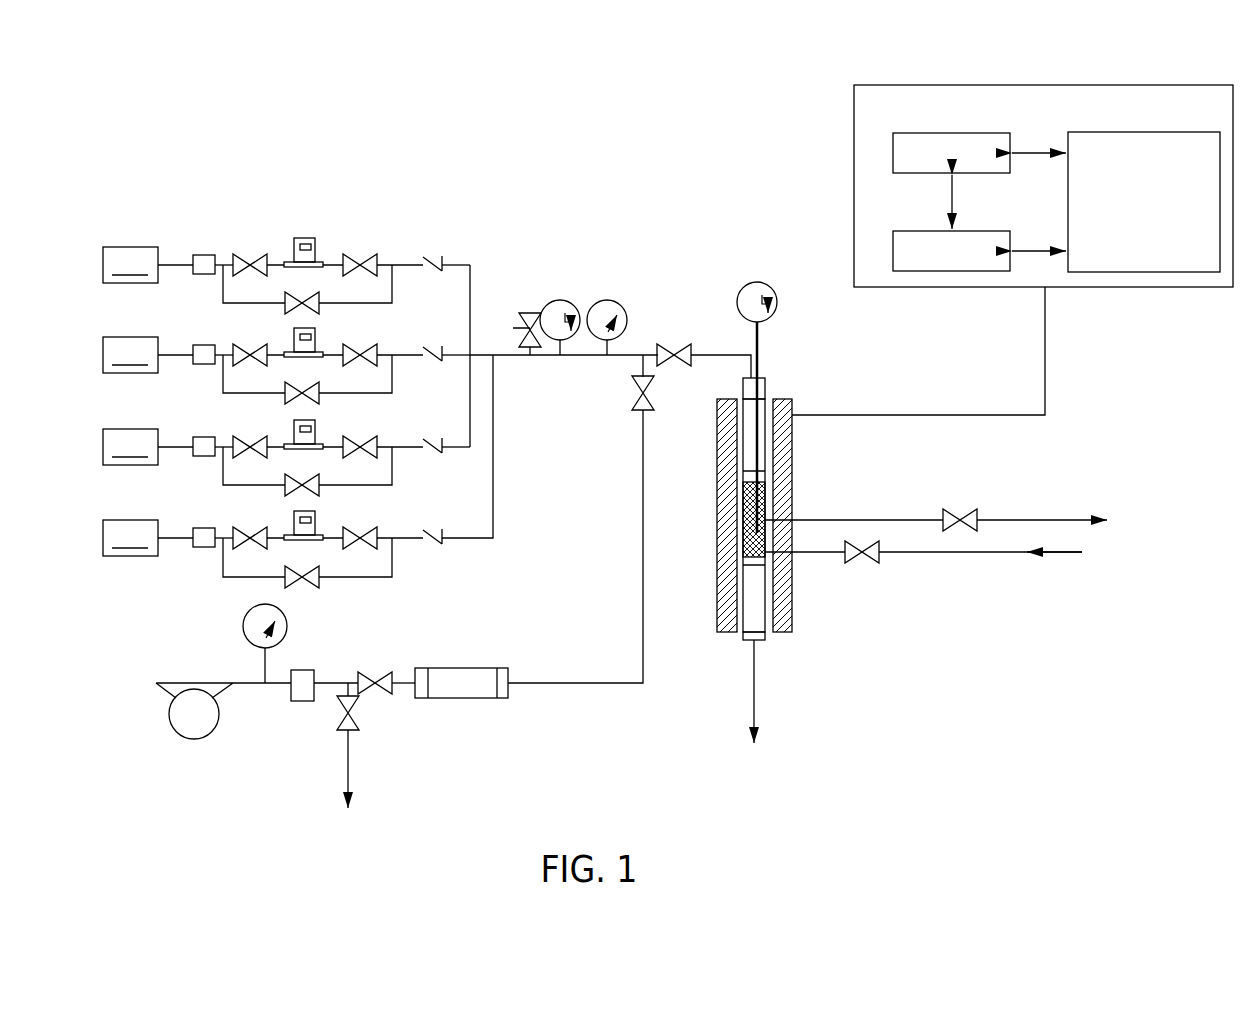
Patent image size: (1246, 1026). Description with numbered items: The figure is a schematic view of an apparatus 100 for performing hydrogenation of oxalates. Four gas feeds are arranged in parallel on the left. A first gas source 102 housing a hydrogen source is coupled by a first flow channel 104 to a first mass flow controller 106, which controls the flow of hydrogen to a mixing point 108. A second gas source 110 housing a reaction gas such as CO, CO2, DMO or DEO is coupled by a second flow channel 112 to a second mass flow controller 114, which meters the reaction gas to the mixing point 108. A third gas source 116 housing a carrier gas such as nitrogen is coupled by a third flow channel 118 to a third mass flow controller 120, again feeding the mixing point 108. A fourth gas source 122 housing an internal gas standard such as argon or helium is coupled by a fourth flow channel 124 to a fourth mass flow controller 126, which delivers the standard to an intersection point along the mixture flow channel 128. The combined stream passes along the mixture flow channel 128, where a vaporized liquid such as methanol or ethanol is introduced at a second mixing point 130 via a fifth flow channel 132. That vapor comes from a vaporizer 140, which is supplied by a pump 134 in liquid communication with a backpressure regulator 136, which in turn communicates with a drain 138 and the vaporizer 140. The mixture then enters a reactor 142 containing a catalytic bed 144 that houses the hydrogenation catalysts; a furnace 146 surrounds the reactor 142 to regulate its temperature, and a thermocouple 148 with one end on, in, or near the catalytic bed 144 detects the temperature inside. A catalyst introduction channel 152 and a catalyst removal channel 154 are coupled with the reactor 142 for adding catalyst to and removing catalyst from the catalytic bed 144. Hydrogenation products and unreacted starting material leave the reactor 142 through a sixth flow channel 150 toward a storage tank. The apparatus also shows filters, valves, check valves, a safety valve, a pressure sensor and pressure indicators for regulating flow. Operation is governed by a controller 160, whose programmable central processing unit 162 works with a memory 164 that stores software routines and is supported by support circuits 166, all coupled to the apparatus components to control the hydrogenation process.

The apparatus 100 is at (174, 140).
The first gas source 102 is at (148, 265).
The first flow channel 104 is at (388, 263).
The first mass flow controller 106 is at (284, 243).
The mixing point 108 is at (472, 352).
The second gas source 110 is at (148, 355).
The second flow channel 112 is at (386, 352).
The second mass flow controller 114 is at (320, 339).
The third gas source 116 is at (148, 447).
The third flow channel 118 is at (387, 444).
The third mass flow controller 120 is at (320, 430).
The fourth gas source 122 is at (148, 538).
The fourth flow channel 124 is at (388, 535).
The fourth mass flow controller 126 is at (320, 521).
The mixture flow channel 128 is at (632, 352).
The second mixing point 130 is at (647, 350).
The fifth flow channel 132 is at (640, 548).
The pump 134 is at (165, 710).
The backpressure regulator 136 is at (301, 669).
The drain 138 is at (358, 770).
The vaporizer 140 is at (456, 667).
The reactor 142 is at (767, 488).
The catalytic bed 144 is at (742, 489).
The furnace 146 is at (787, 450).
The thermocouple 148 is at (764, 282).
The sixth flow channel 150 is at (752, 698).
The catalyst introduction channel 152 is at (913, 563).
The catalyst removal channel 154 is at (1021, 518).
The controller 160 is at (1012, 235).
The central processing unit 162 is at (893, 146).
The memory 164 is at (937, 231).
The support circuits 166 is at (1160, 132).